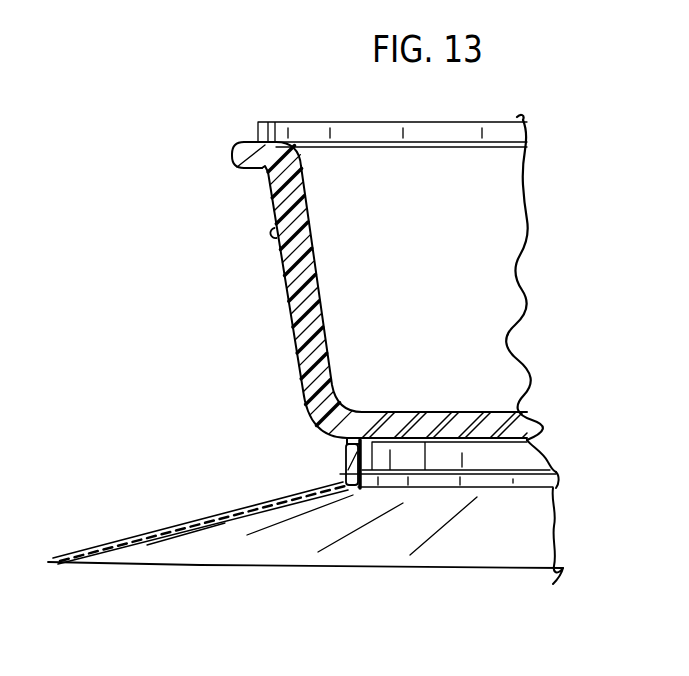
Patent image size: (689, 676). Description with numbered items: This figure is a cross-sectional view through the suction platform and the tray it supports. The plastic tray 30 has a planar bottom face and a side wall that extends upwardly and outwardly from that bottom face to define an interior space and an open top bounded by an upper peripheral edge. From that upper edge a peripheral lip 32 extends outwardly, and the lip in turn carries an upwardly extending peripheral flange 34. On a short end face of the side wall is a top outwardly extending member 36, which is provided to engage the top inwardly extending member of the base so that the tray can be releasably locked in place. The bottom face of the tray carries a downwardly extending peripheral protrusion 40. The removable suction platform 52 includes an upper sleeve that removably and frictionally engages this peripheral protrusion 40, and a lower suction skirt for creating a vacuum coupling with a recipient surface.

The plastic tray 30 is at (302, 372).
The peripheral lip 32 is at (268, 176).
The peripheral flange 34 is at (268, 122).
The top outwardly extending member 36 is at (277, 233).
The peripheral protrusion 40 is at (363, 457).
The suction platform 52 is at (203, 545).